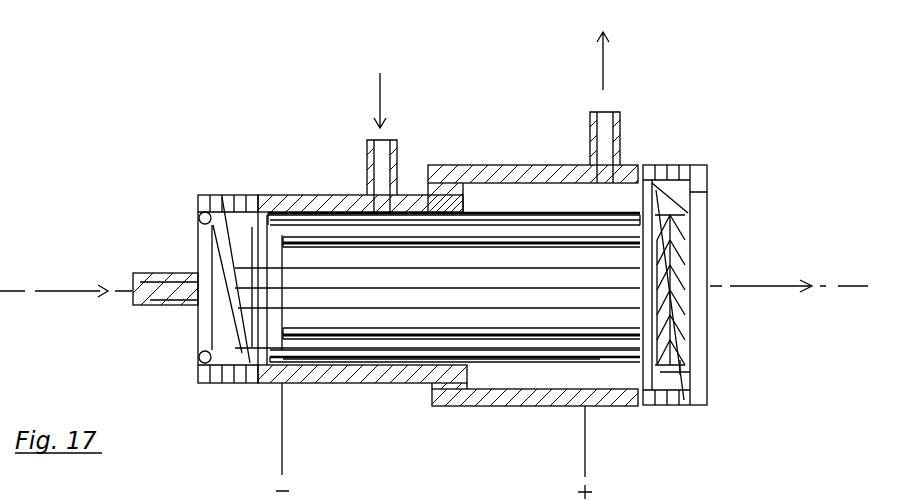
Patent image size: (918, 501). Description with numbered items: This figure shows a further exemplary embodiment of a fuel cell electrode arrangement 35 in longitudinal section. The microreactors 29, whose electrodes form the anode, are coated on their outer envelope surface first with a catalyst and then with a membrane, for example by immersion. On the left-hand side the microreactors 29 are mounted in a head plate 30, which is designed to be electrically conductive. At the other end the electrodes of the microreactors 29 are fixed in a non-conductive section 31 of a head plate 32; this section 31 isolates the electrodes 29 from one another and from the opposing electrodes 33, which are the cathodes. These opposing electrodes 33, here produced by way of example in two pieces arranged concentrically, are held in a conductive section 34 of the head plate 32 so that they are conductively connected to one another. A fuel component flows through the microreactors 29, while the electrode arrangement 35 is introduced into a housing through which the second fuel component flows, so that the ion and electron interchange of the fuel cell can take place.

The microreactor 29 is at (317, 212).
The head plate 30 is at (222, 197).
The non-conductive section 31 is at (663, 268).
The head plate 32 is at (688, 375).
The opposing electrode 33 is at (317, 364).
The conductive section 34 is at (680, 318).
The electrode arrangement 35 is at (499, 373).